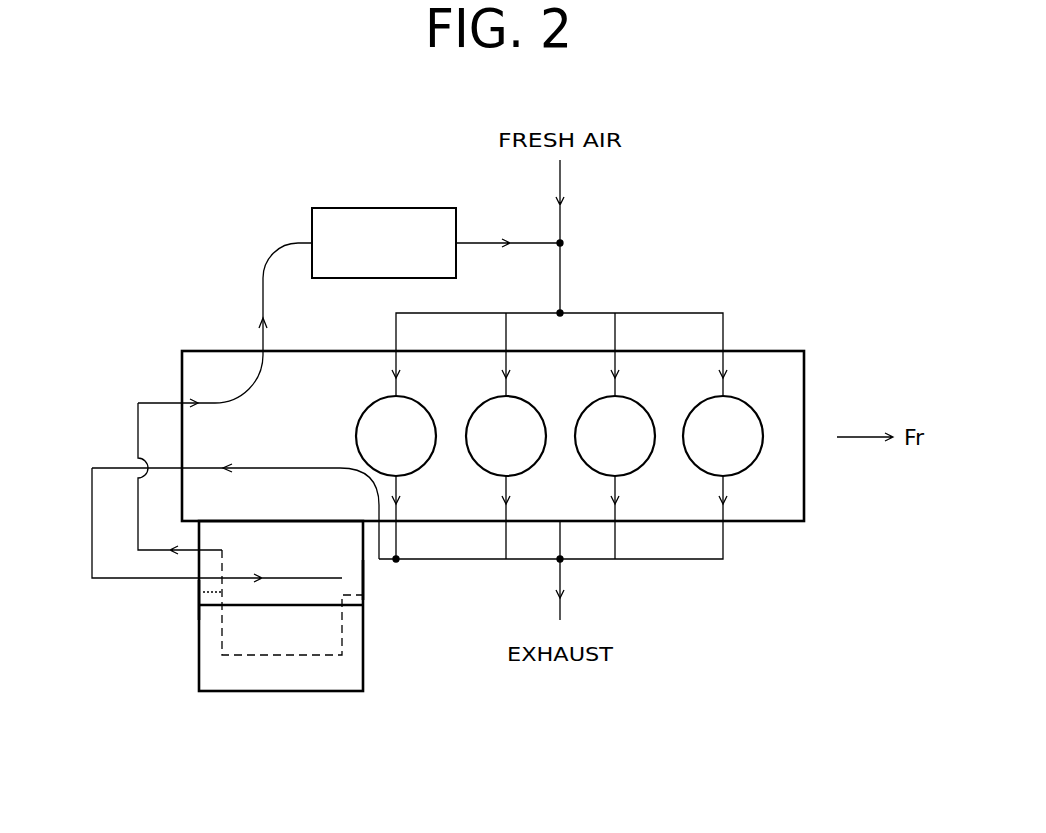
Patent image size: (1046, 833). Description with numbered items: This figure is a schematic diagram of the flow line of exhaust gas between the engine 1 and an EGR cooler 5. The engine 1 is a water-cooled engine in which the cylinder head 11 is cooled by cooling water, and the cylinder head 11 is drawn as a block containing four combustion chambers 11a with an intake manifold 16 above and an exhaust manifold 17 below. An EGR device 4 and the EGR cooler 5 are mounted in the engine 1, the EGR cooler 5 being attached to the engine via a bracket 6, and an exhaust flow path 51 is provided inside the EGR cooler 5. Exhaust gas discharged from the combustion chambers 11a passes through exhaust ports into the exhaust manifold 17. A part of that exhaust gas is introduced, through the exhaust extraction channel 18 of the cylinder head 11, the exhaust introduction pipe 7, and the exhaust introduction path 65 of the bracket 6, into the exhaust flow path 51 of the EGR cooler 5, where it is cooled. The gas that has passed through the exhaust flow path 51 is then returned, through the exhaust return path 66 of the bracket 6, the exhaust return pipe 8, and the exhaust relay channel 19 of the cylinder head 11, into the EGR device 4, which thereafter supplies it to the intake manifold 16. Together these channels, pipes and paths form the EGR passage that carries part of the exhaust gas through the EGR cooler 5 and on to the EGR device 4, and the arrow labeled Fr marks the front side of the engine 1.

The engine 1 is at (810, 325).
The EGR device 4 is at (398, 196).
The EGR cooler 5 is at (358, 701).
The bracket 6 is at (377, 583).
The exhaust introduction pipe 7 is at (115, 580).
The exhaust return pipe 8 is at (138, 412).
The cylinder head 11 is at (348, 387).
The combustion chambers 11a is at (487, 412).
The intake manifold 16 is at (660, 308).
The exhaust manifold 17 is at (656, 566).
The exhaust extraction channel 18 is at (307, 468).
The exhaust relay channel 19 is at (250, 392).
The exhaust flow path 51 is at (282, 656).
The exhaust introduction path 65 is at (370, 600).
The exhaust return path 66 is at (195, 600).